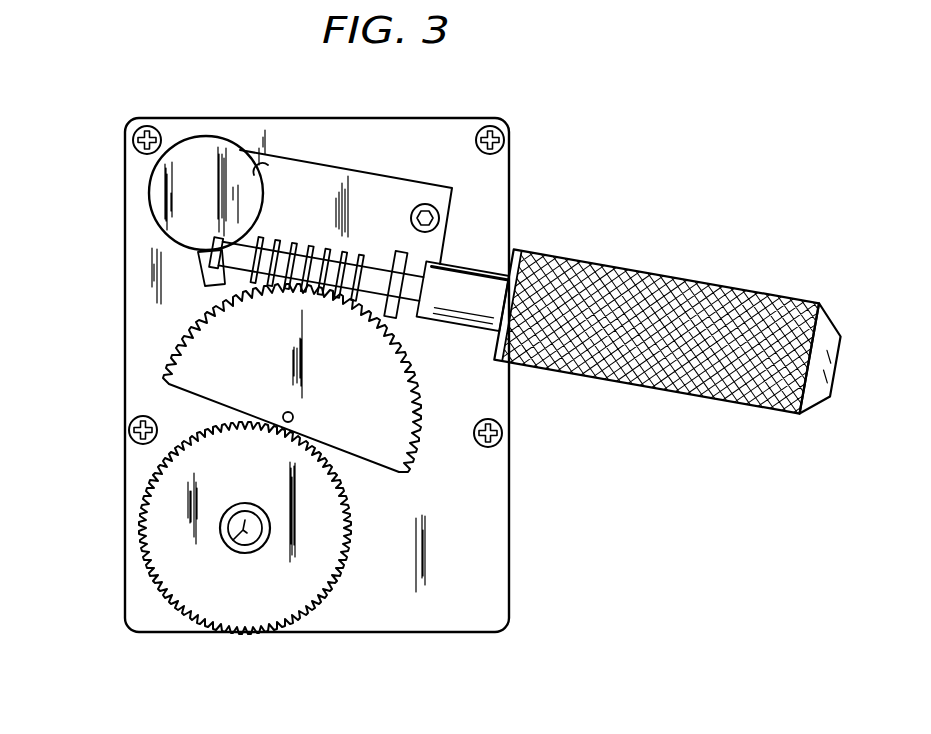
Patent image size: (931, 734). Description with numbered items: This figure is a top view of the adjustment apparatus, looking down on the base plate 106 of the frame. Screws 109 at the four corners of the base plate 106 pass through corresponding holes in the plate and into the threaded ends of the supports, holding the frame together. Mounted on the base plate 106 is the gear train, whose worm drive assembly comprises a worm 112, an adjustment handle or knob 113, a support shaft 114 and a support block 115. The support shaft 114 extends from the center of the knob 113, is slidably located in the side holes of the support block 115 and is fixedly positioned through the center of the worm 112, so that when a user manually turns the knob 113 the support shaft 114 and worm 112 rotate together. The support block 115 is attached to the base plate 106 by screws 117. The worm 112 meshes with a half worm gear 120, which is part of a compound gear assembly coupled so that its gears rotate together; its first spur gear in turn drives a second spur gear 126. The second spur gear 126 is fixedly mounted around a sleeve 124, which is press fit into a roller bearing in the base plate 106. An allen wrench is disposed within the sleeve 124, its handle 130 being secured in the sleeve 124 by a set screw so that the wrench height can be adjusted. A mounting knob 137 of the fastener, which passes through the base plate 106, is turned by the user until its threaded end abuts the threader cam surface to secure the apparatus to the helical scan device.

The base plate 106 is at (132, 290).
The screws 109 is at (124, 142).
The worm 112 is at (307, 252).
The adjustment handle or knob 113 is at (590, 382).
The support shaft 114 is at (378, 262).
The support block 115 is at (290, 160).
The screws 117 is at (440, 218).
The half worm gear 120 is at (178, 347).
The sleeve 124 is at (222, 528).
The second spur gear 126 is at (160, 590).
The handle 130 is at (253, 553).
The mounting knob 137 is at (163, 210).